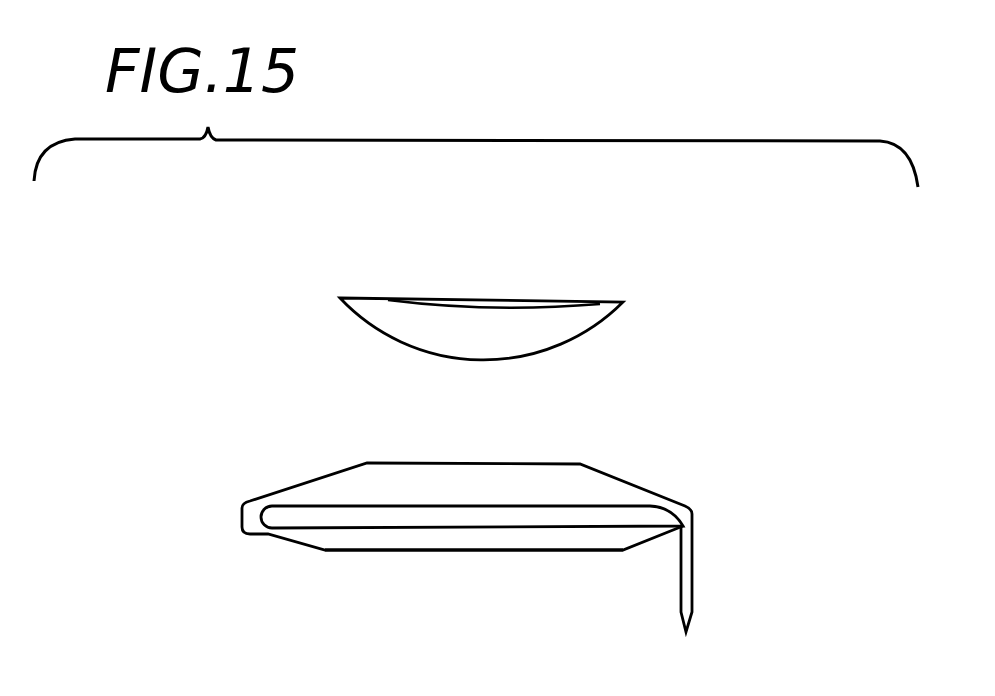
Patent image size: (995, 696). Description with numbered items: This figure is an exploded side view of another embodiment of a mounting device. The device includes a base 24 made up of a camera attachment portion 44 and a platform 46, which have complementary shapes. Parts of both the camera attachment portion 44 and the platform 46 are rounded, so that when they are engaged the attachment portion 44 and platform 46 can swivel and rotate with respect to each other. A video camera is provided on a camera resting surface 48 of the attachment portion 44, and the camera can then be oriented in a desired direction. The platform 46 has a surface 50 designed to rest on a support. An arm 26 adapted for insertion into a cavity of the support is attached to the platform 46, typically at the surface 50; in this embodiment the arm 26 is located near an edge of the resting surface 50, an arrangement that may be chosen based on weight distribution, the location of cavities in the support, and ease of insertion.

The base 24 is at (302, 367).
The arm 26 is at (693, 580).
The camera attachment portion 44 is at (600, 321).
The platform 46 is at (300, 483).
The camera resting surface 48 is at (565, 297).
The surface 50 is at (396, 551).